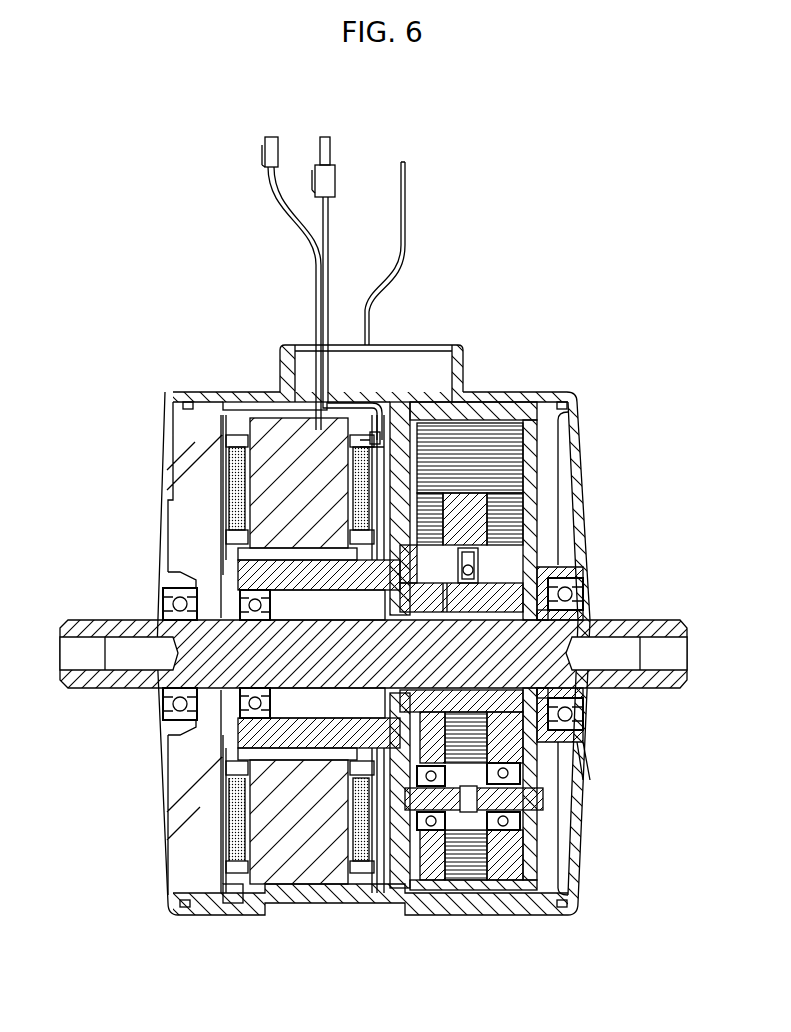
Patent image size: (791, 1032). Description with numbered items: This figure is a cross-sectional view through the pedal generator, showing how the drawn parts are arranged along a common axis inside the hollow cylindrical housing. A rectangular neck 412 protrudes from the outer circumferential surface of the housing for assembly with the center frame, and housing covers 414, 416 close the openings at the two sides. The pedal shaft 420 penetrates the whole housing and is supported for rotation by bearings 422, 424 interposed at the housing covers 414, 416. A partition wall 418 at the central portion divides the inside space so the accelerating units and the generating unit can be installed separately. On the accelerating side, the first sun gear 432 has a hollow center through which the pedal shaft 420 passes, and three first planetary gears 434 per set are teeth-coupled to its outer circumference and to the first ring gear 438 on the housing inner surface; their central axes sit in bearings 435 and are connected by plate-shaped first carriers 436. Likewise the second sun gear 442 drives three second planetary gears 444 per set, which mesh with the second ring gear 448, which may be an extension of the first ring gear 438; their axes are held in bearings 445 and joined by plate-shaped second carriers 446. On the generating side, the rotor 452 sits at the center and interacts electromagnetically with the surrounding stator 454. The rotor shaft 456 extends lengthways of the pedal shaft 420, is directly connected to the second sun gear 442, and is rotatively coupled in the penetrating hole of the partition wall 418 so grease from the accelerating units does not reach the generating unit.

The neck 412 is at (460, 362).
The housing cover 414 is at (578, 517).
The housing cover 416 is at (170, 456).
The partition wall 418 is at (376, 440).
The pedal shaft 420 is at (165, 703).
The bearing 422 is at (592, 700).
The bearing 424 is at (167, 603).
The first sun gear 432 is at (560, 670).
The first planetary gear 434 is at (445, 542).
The bearing 435 is at (540, 823).
The first carrier 436 is at (560, 592).
The first ring gear 438 is at (560, 484).
The second ring gear 448 is at (495, 450).
The second sun gear 442 is at (587, 725).
The second planetary gear 444 is at (470, 568).
The bearing 445 is at (408, 865).
The second carrier 446 is at (433, 875).
The rotor 452 is at (228, 783).
The stator 454 is at (281, 852).
The rotor shaft 456 is at (345, 840).